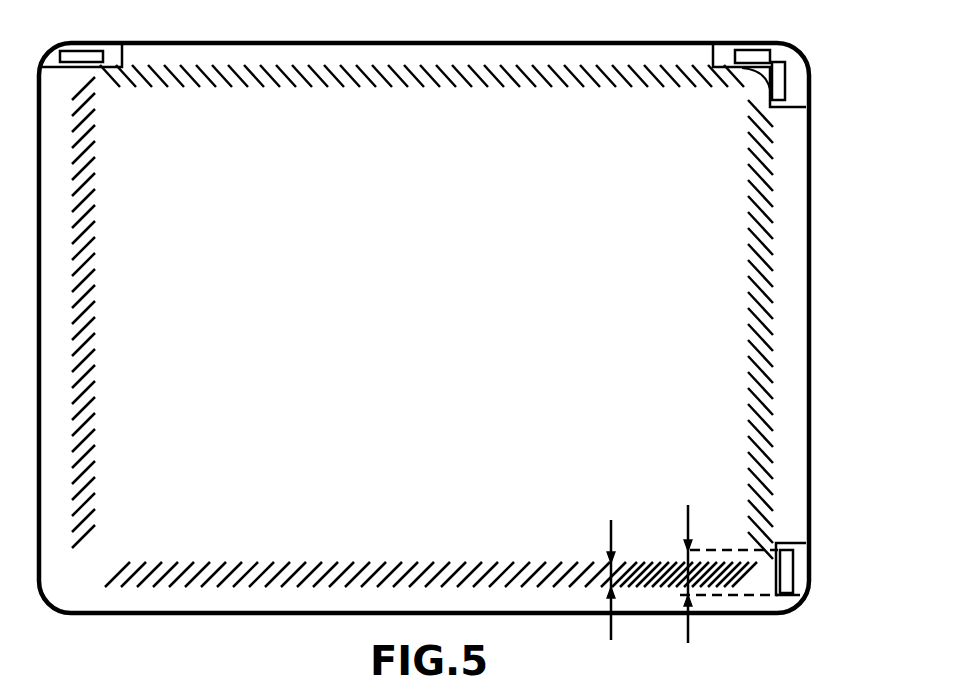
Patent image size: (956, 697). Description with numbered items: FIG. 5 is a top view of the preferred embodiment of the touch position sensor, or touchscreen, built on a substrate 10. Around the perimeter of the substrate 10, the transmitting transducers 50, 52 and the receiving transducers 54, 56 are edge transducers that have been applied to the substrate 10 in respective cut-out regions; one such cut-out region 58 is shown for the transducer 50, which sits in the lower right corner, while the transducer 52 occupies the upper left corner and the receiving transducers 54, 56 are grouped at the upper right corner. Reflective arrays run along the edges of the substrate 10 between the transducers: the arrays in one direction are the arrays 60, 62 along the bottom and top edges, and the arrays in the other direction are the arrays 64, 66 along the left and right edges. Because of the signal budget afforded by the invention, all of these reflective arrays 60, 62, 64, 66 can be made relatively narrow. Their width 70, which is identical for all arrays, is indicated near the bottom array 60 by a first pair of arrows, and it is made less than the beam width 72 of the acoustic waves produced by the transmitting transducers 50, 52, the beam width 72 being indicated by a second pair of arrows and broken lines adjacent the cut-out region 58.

The substrate 10 is at (730, 616).
The transmitting transducer 50 is at (786, 580).
The transmitting transducer 52 is at (92, 51).
The receiving transducer 54 is at (786, 83).
The receiving transducer 56 is at (760, 60).
The cut-out region 58 is at (790, 545).
The reflective array 60 is at (455, 565).
The reflective array 62 is at (468, 82).
The reflective array 64 is at (97, 327).
The reflective array 66 is at (753, 306).
The width 70 is at (608, 568).
The beam width 72 is at (686, 556).